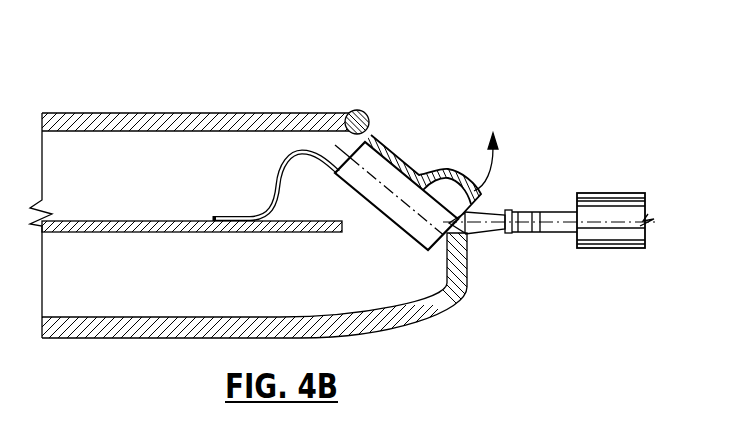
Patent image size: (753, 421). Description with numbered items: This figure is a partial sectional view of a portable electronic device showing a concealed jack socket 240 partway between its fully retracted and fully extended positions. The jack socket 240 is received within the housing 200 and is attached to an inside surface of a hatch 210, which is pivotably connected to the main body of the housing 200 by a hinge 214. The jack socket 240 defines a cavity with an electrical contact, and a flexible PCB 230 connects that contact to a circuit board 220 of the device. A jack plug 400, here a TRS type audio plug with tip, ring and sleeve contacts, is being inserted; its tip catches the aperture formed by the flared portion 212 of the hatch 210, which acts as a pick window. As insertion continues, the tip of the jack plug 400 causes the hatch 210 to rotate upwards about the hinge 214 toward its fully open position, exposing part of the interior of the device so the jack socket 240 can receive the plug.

The housing 200 is at (105, 113).
The hatch 210 is at (386, 145).
The flared portion 212 is at (468, 184).
The hinge 214 is at (361, 109).
The circuit board 220 is at (88, 233).
The flexible PCB 230 is at (273, 168).
The jack socket 240 is at (393, 222).
The jack plug 400 is at (599, 193).